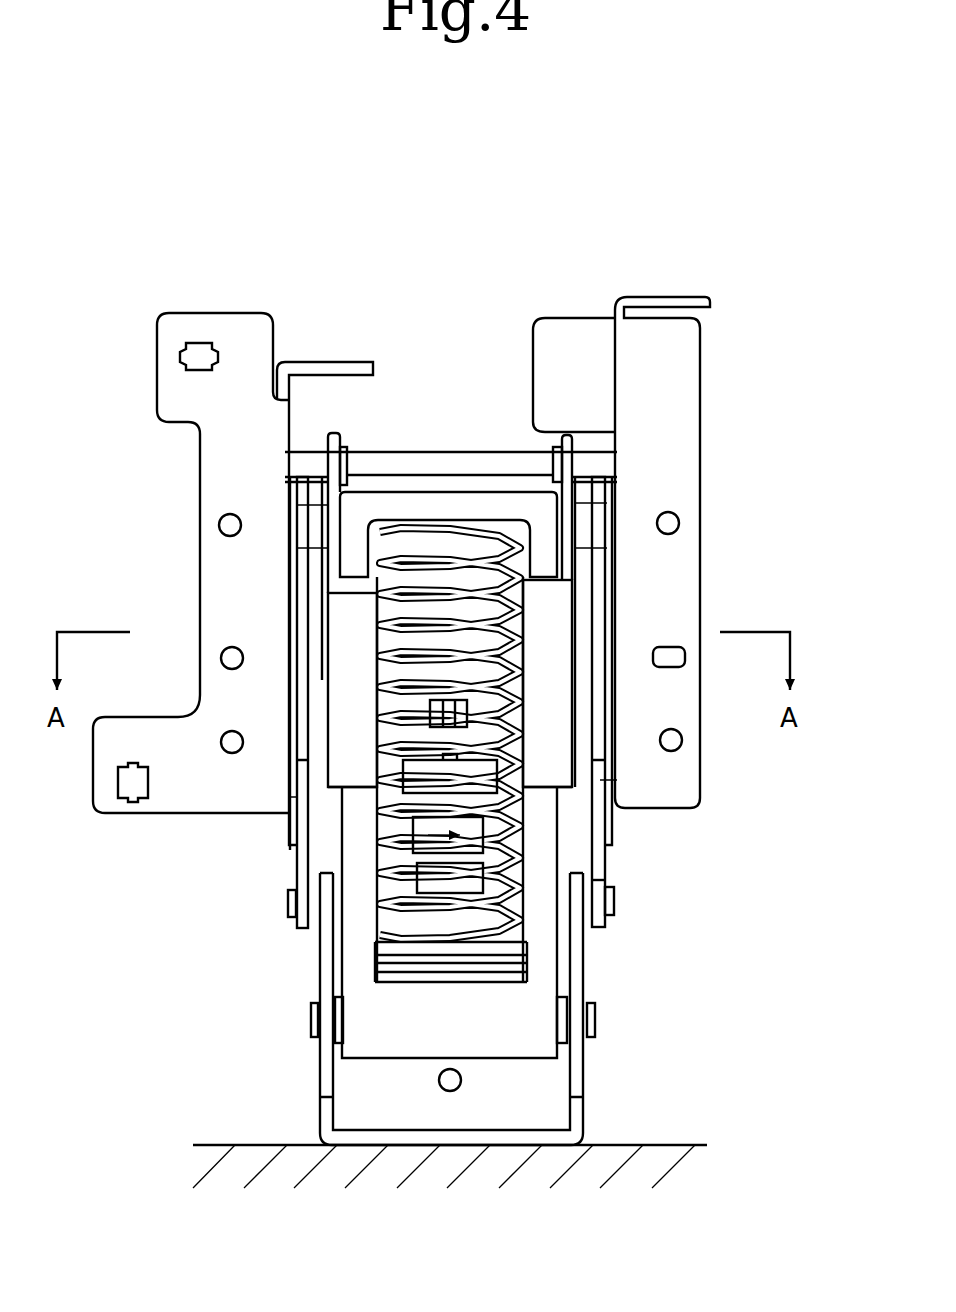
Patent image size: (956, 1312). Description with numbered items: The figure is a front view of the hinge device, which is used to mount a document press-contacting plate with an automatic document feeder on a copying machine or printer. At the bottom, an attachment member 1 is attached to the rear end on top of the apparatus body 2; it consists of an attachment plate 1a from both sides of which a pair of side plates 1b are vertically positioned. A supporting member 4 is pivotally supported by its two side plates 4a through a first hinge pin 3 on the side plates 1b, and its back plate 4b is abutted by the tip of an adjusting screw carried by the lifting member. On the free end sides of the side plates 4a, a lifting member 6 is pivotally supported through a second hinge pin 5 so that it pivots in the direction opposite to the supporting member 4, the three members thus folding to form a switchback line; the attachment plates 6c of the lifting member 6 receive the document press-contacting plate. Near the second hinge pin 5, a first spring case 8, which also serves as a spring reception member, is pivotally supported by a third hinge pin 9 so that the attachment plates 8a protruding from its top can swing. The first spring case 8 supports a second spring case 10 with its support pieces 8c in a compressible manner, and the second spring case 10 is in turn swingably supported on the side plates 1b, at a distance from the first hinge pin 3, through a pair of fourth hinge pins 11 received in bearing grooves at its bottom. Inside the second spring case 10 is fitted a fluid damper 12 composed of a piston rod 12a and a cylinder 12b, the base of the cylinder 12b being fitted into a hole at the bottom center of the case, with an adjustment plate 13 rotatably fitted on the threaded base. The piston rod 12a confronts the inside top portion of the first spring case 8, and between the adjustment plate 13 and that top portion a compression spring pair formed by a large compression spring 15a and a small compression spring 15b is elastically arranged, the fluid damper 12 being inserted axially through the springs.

The attachment member 1 is at (598, 1058).
The attachment plate 1a is at (457, 1140).
The side plates 1b is at (317, 950).
The apparatus body 2 is at (665, 1133).
The first hinge pin 3 is at (612, 900).
The supporting member 4 is at (293, 855).
The side plates 4a is at (303, 795).
The back plate 4b is at (578, 852).
The second hinge pin 5 is at (580, 520).
The lifting member 6 is at (707, 357).
The attachment plates 6c is at (212, 558).
The first spring case 8 is at (557, 638).
The attachment plates 8a is at (336, 433).
The support pieces 8c is at (342, 696).
The third hinge pin 9 is at (441, 452).
The second spring case 10 is at (377, 1037).
The fourth hinge pins 11 is at (590, 1015).
The fluid damper 12 is at (437, 835).
The piston rod 12a is at (465, 692).
The cylinder 12b is at (468, 817).
The adjustment plate 13 is at (380, 957).
The large compression spring 15a is at (393, 580).
The small compression spring 15b is at (540, 585).